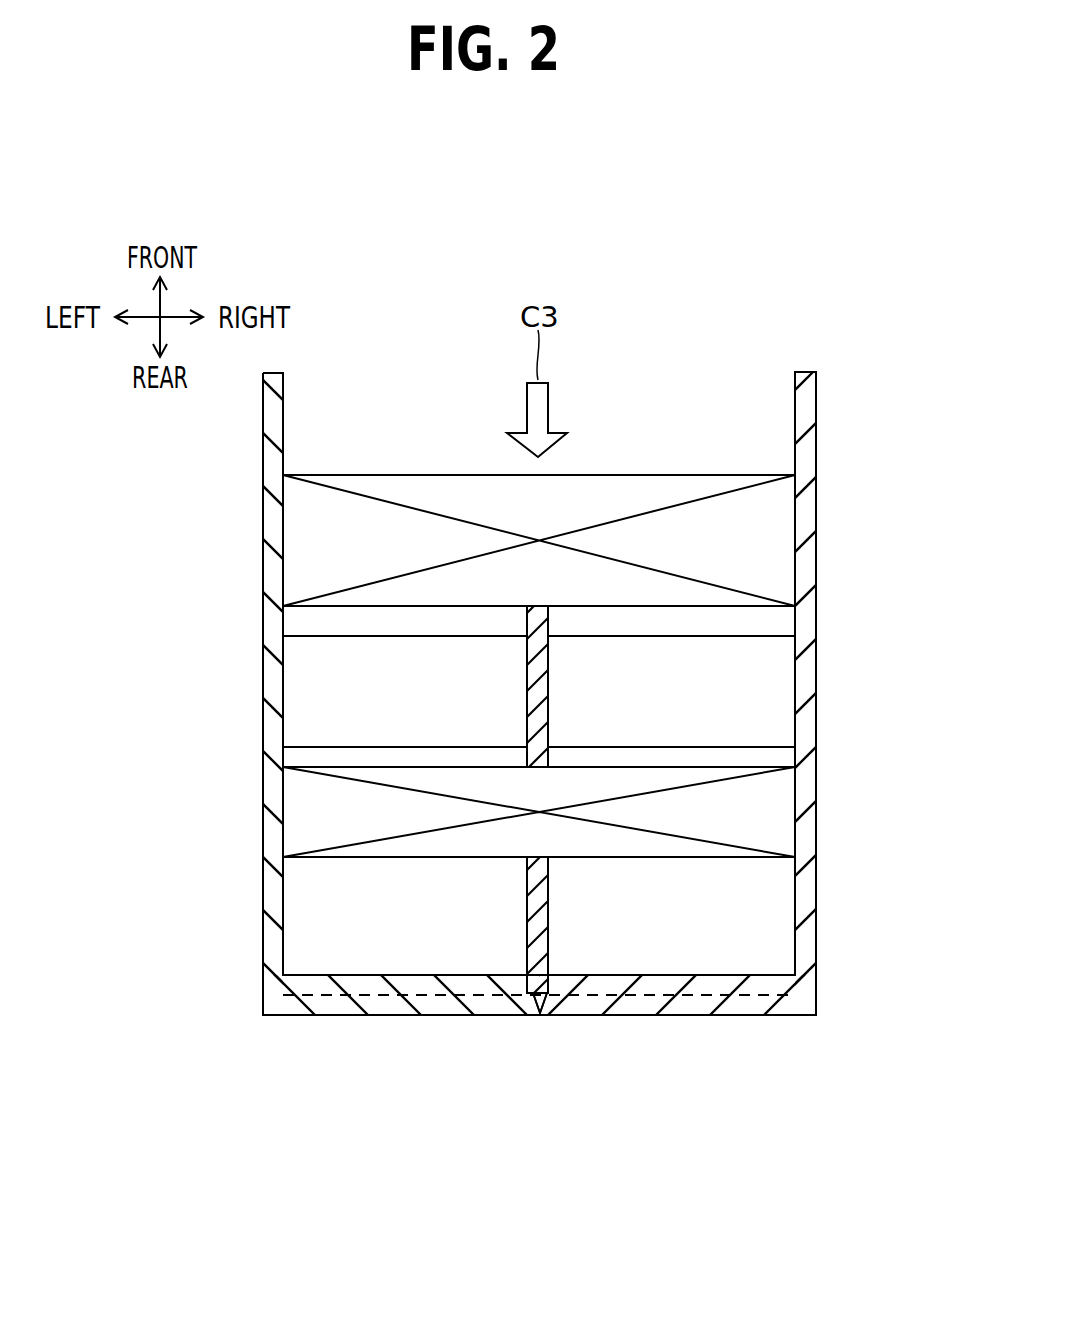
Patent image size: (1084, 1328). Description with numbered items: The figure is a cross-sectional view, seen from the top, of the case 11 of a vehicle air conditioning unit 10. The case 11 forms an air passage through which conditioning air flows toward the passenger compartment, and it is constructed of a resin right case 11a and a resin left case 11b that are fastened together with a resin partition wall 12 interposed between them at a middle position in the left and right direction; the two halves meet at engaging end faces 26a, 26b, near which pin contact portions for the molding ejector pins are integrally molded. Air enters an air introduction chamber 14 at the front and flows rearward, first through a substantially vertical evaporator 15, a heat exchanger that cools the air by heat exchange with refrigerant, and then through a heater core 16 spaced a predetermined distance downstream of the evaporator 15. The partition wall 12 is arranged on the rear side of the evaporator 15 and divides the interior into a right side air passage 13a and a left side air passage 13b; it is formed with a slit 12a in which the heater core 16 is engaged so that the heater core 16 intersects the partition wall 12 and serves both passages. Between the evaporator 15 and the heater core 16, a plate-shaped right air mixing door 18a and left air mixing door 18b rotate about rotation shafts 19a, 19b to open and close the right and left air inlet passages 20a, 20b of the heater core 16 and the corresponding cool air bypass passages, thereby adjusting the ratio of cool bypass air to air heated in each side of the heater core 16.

The air conditioning unit 10 is at (830, 573).
The case 11 is at (542, 793).
The right case 11a is at (423, 1160).
The left case 11b is at (458, 1015).
The partition wall 12 is at (531, 805).
The slit 12a is at (527, 862).
The right side air passage 13a is at (755, 920).
The left side air passage 13b is at (325, 921).
The air introduction chamber 14 is at (600, 430).
The evaporator 15 is at (753, 533).
The heater core 16 is at (755, 813).
The right air mixing door 18a is at (730, 636).
The left air mixing door 18b is at (347, 636).
The rotation shaft 19a is at (708, 747).
The rotation shaft 19b is at (345, 747).
The right air inlet passage 20a is at (734, 767).
The left air inlet passage 20b is at (347, 769).
The engaging end face 26a is at (541, 1014).
The engaging end face 26b is at (540, 1003).